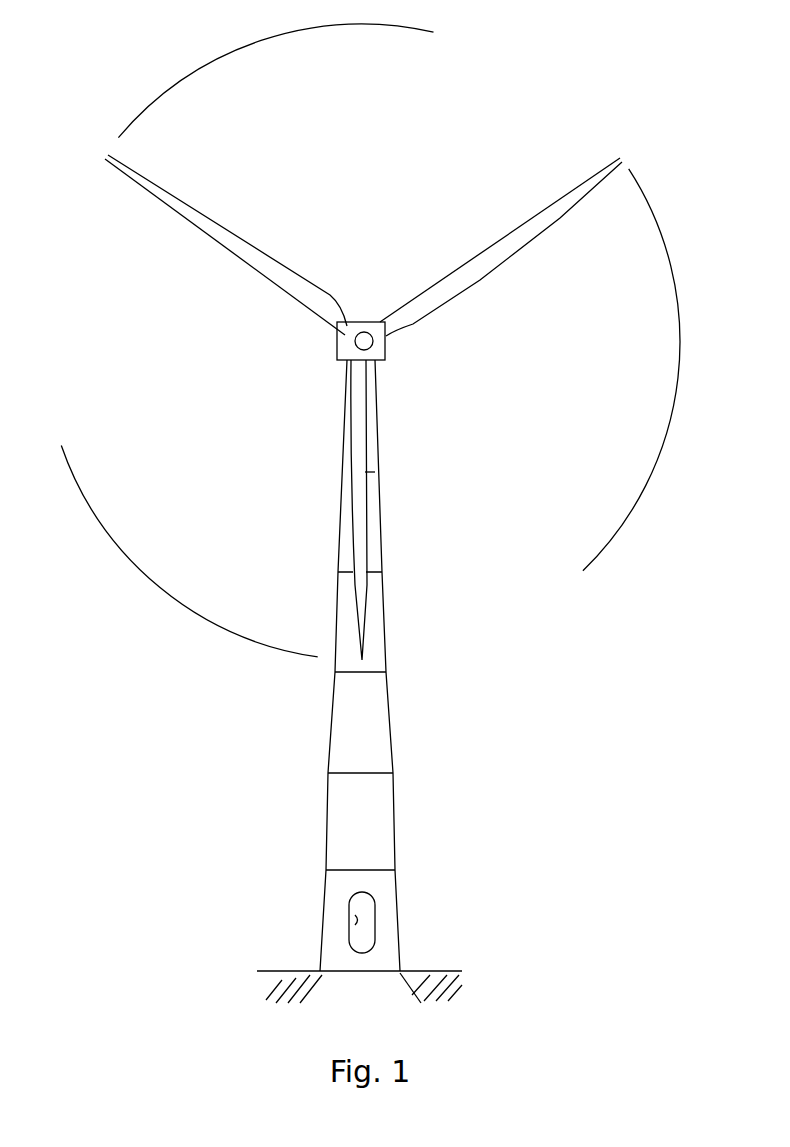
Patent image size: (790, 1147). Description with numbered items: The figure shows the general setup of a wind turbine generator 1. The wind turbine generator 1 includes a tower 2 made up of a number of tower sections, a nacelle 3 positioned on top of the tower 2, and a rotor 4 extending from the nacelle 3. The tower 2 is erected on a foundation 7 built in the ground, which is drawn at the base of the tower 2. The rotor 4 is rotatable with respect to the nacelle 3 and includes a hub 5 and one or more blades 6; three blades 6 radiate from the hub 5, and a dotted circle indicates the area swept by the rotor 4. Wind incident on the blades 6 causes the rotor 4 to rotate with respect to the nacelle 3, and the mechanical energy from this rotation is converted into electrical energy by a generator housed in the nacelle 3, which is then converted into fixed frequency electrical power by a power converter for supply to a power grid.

The wind turbine generator 1 is at (122, 750).
The tower 2 is at (377, 835).
The nacelle 3 is at (383, 354).
The rotor 4 is at (617, 533).
The hub 5 is at (360, 346).
The blades 6 is at (470, 262).
The foundation 7 is at (323, 985).